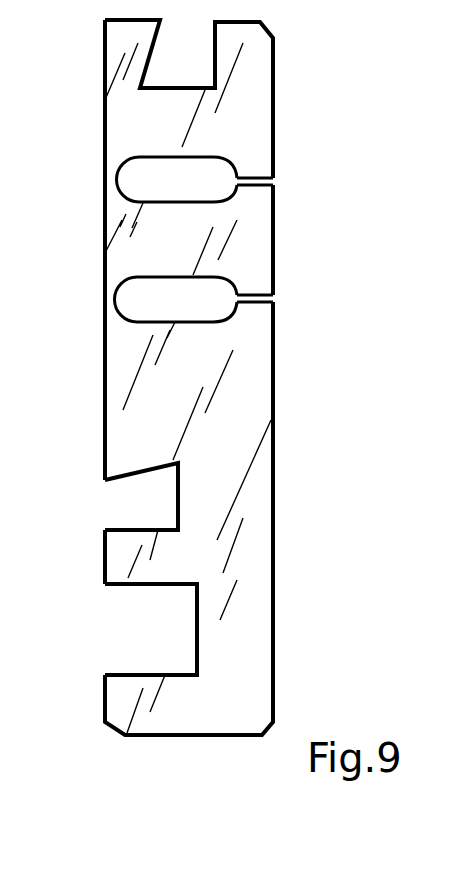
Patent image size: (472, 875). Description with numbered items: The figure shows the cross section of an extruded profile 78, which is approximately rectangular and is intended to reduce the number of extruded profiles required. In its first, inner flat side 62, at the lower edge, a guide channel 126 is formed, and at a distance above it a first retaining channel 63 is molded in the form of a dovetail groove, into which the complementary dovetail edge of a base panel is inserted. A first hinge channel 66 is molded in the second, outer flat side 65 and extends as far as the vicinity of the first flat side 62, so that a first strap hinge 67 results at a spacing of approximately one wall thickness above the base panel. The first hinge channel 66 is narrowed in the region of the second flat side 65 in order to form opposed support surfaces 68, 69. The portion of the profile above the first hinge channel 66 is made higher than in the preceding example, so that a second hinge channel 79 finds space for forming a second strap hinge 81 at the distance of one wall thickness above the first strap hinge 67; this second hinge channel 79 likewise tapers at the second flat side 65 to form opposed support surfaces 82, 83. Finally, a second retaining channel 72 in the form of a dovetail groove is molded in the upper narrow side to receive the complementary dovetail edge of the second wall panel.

The first flat side 62 is at (103, 438).
The first retaining channel 63 is at (156, 497).
The second flat side 65 is at (277, 418).
The first hinge channel 66 is at (168, 291).
The first strap hinge 67 is at (112, 298).
The support surface 68 is at (257, 309).
The support surface 69 is at (256, 288).
The second retaining channel 72 is at (179, 57).
The extruded profile 78 is at (290, 460).
The second hinge channel 79 is at (163, 172).
The second strap hinge 81 is at (113, 178).
The support surface 82 is at (257, 189).
The support surface 83 is at (252, 171).
The guide channel 126 is at (157, 625).